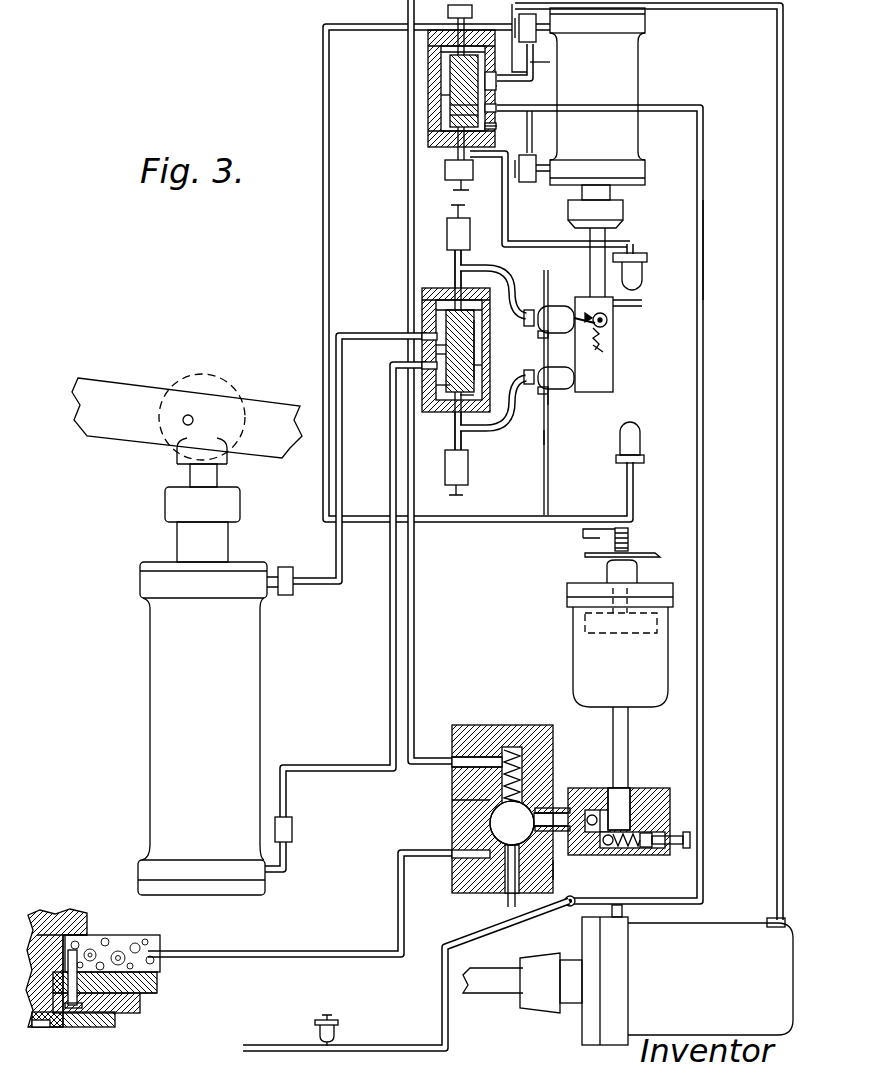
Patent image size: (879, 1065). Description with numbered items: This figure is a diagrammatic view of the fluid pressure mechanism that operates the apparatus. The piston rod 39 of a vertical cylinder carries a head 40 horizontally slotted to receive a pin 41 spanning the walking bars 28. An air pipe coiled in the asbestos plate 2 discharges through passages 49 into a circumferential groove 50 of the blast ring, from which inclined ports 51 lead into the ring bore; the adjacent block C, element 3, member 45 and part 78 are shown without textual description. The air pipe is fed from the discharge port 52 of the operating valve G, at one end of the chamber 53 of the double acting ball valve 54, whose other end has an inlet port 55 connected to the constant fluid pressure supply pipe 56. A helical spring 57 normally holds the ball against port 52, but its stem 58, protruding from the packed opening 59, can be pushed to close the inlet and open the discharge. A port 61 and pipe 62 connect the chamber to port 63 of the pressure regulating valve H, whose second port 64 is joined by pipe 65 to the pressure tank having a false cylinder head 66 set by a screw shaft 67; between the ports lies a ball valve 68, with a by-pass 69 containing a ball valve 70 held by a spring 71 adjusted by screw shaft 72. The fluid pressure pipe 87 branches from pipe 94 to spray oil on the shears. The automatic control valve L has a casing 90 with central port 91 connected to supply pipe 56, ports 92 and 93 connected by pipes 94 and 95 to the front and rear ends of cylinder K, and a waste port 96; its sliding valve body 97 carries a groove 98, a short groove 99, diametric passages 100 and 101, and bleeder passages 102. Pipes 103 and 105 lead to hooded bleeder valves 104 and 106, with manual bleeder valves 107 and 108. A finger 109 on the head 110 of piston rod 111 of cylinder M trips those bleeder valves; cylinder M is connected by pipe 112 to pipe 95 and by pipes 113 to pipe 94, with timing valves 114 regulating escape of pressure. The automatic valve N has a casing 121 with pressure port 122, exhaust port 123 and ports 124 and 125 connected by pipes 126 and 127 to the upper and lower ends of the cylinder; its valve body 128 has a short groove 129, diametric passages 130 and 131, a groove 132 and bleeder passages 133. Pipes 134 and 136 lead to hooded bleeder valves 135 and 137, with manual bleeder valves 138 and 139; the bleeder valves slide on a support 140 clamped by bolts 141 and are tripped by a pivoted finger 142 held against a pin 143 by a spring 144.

The asbestos plate 2 is at (153, 940).
The mold top piece 3 is at (75, 930).
The walking bars 28 is at (187, 418).
The piston rod 39 is at (218, 474).
The head 40 is at (245, 398).
The pin 41 is at (194, 420).
The bottom plate 45 is at (43, 1027).
The passages 49 is at (145, 1000).
The circumferential groove 50 is at (90, 1027).
The inclined ports 51 is at (72, 1012).
The discharge port 52 is at (467, 852).
The chamber 53 is at (475, 808).
The double acting ball valve 54 is at (512, 823).
The inlet port 55 is at (478, 756).
The fluid pressure supply pipe 56 is at (414, 712).
The helical spring 57 is at (522, 760).
The stem 58 is at (507, 903).
The packed opening 59 is at (553, 868).
The port 61 is at (540, 808).
The pipe 62 is at (542, 809).
The port 63 is at (594, 814).
The second port 64 is at (625, 795).
The pipe 65 is at (630, 752).
The false cylinder head 66 is at (573, 628).
The screw shaft 67 is at (629, 534).
The ball valve 68 is at (600, 810).
The by-pass 69 is at (605, 848).
The ball valve 70 is at (620, 848).
The spring 71 is at (645, 848).
The screw shaft 72 is at (685, 850).
The inlet tube 78 is at (493, 970).
The fluid pressure pipe 87 is at (388, 1046).
The casing 90 is at (445, 80).
The central port 91 is at (445, 95).
The port 92 is at (498, 105).
The port 93 is at (510, 55).
The pipe 94 is at (705, 255).
The pipe 95 is at (776, 272).
The waste port 96 is at (505, 88).
The sliding valve body 97 is at (498, 128).
The groove 98 is at (450, 105).
The short groove 99 is at (505, 80).
The diametric passage 100 is at (450, 115).
The diametric passage 101 is at (440, 52).
The bleeder passages 102 is at (433, 48).
The pipe 103 is at (330, 163).
The hooded bleeder valve 104 is at (620, 440).
The pipe 105 is at (506, 232).
The hooded bleeder valve 106 is at (645, 280).
The manually operated bleeder valve 107 is at (448, 12).
The manually operated bleeder valve 108 is at (475, 158).
The finger 109 is at (642, 302).
The head 110 is at (594, 344).
The piston rod 111 is at (606, 236).
The pipe 112 is at (552, 64).
The pipes 113 is at (546, 132).
The timing valves 114 is at (537, 22).
The valve casing 121 is at (430, 300).
The pressure port 122 is at (486, 340).
The exhaust port 123 is at (440, 345).
The port 124 is at (440, 325).
The port 125 is at (440, 360).
The pipe 126 is at (343, 404).
The pipe 127 is at (390, 420).
The valve body 128 is at (470, 395).
The short groove 129 is at (445, 354).
The diametric passage 130 is at (438, 310).
The diametric passage 131 is at (450, 385).
The groove 132 is at (480, 365).
The bleeder passages 133 is at (488, 323).
The pipe 134 is at (455, 290).
The hooded bleeder valve 135 is at (550, 305).
The pipe 136 is at (455, 438).
The hooded bleeder valve 137 is at (575, 392).
The manually operated bleeder valve 138 is at (447, 230).
The manually operated bleeder valve 139 is at (447, 472).
The support 140 is at (550, 436).
The bolts 141 is at (552, 395).
The finger 142 is at (610, 320).
The pin 143 is at (570, 330).
The spring 144 is at (605, 345).
The mold assembly C is at (158, 994).
The cylinder F is at (202, 728).
The operating valve G is at (452, 727).
The pressure regulating valve H is at (619, 811).
The cylinder K is at (687, 975).
The automatic control valve L is at (430, 68).
The fluid pressure cylinder M is at (597, 118).
The automatic valve N is at (455, 358).